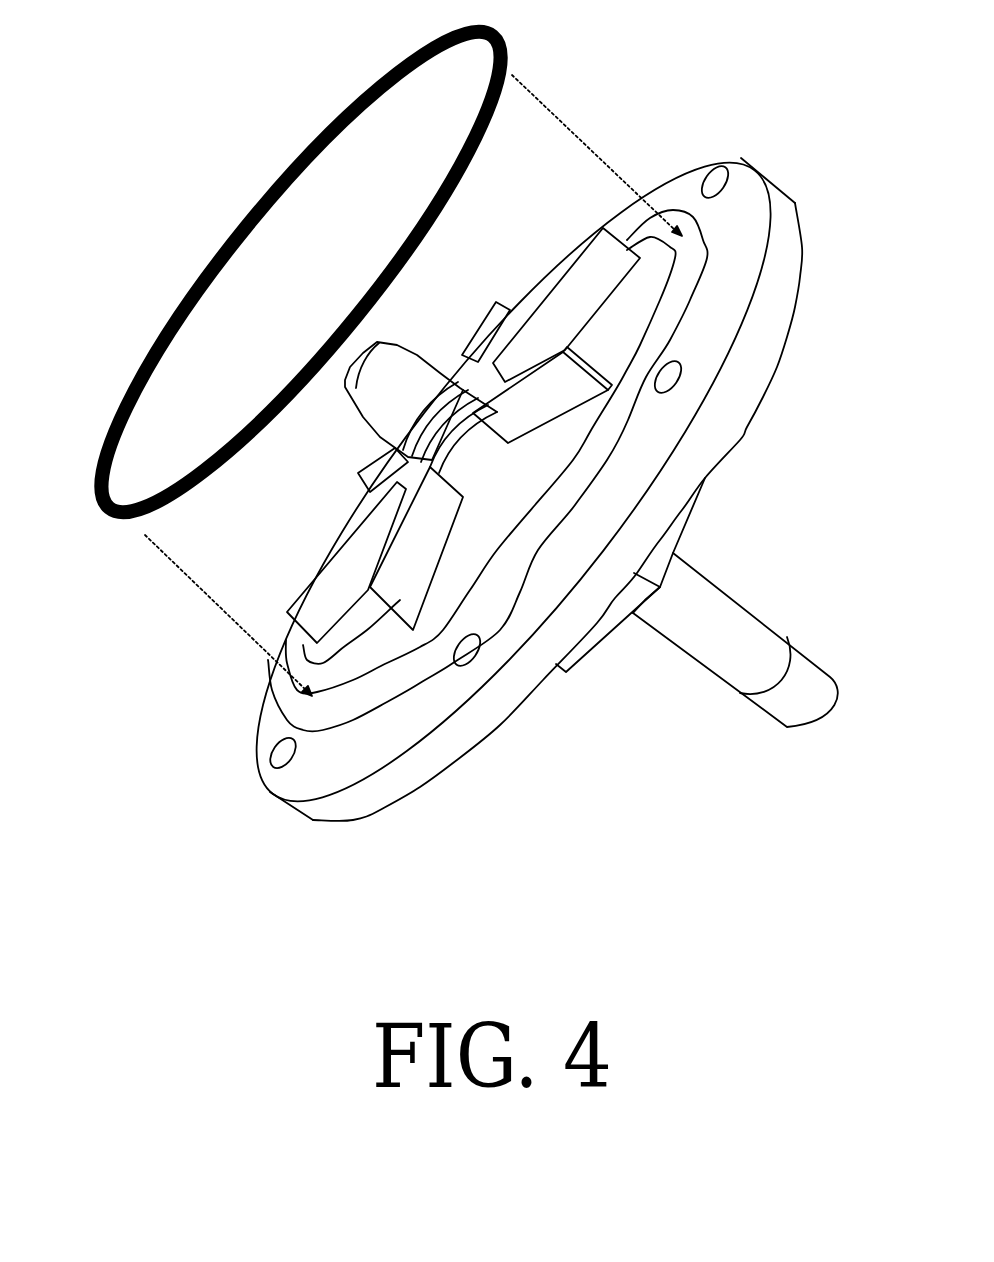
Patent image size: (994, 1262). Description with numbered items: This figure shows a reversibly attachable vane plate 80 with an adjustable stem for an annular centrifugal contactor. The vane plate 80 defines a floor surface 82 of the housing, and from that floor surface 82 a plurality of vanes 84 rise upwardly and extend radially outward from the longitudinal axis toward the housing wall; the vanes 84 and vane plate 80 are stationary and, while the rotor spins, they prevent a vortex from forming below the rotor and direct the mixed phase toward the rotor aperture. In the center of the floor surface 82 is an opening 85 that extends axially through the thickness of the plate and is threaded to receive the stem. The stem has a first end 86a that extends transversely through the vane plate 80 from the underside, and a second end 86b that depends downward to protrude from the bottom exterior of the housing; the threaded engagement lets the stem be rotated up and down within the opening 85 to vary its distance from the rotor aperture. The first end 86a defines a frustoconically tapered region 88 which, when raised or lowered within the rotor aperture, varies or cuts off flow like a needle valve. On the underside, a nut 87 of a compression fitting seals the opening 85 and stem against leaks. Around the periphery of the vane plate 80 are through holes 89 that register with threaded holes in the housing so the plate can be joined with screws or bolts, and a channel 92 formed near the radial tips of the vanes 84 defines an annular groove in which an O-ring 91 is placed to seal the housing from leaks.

The vane plate 80 is at (800, 120).
The floor surface 82 is at (610, 330).
The vanes 84 is at (397, 592).
The opening 85 is at (493, 453).
The first end 86a is at (393, 410).
The second end 86b is at (798, 703).
The nut 87 is at (613, 617).
The frustoconically tapered region 88 is at (393, 358).
The through holes 89 is at (717, 183).
The O-ring 91 is at (153, 345).
The channel 92 is at (370, 690).